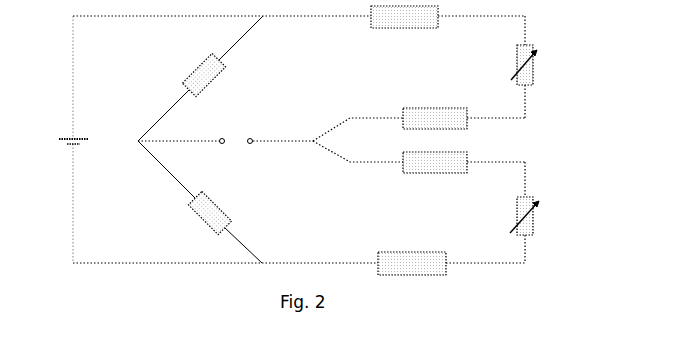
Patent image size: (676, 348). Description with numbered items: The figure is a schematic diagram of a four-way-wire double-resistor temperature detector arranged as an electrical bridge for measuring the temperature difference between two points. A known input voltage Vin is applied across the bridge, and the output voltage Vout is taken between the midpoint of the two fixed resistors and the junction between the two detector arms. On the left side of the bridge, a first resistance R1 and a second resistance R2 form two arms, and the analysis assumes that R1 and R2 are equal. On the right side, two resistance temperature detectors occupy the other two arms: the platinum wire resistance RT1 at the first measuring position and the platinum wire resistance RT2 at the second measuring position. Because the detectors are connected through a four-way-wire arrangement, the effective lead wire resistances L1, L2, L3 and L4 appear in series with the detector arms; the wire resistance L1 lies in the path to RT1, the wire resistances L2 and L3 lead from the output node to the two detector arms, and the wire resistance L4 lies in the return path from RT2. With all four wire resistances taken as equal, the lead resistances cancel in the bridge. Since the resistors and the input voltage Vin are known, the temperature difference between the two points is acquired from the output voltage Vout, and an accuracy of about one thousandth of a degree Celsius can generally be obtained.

The input voltage Vin is at (62, 144).
The output voltage Vout is at (233, 127).
The resistance R1 is at (200, 78).
The resistance R2 is at (200, 202).
The effective wire resistance L1 is at (404, 32).
The effective wire resistance L2 is at (435, 107).
The effective wire resistance L3 is at (435, 175).
The effective wire resistance L4 is at (412, 252).
The platinum wire resistance RT1 is at (540, 65).
The platinum wire resistance RT2 is at (537, 217).